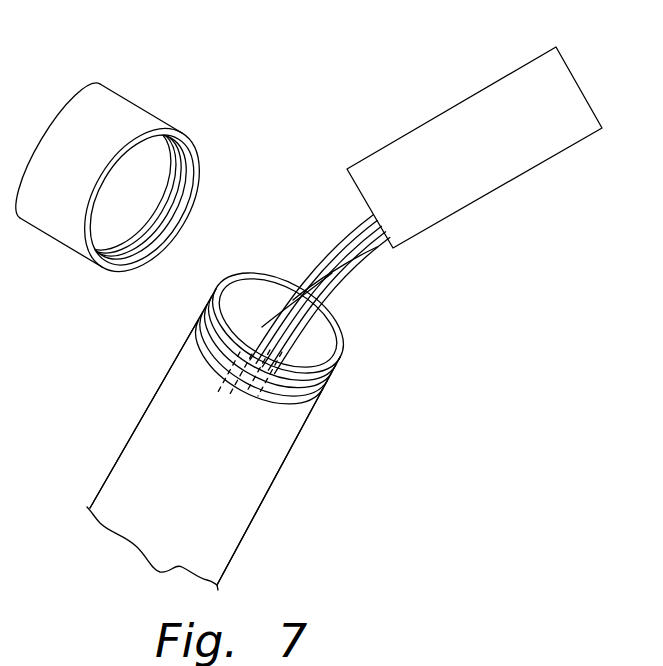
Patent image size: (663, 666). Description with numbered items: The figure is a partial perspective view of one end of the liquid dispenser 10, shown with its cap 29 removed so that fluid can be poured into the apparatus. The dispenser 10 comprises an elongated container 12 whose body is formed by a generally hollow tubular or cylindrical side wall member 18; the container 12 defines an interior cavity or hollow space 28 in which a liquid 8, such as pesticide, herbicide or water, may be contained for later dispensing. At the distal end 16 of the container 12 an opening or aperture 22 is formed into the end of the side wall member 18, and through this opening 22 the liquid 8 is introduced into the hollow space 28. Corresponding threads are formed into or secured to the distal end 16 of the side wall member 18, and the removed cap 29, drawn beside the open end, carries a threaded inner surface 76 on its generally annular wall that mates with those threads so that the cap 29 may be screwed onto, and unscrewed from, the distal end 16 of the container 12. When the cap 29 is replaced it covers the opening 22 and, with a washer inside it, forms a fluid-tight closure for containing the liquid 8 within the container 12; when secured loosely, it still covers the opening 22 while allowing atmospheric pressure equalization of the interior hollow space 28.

The end cap 29 is at (100, 125).
The threaded inner surface 76 is at (151, 258).
The liquid 8 is at (327, 262).
The interior cavity or hollow space 28 is at (312, 343).
The opening or aperture 22 is at (308, 358).
The distal end 16 is at (379, 383).
The dispenser 10 is at (352, 467).
The side wall member 18 is at (202, 497).
The elongated container 12 is at (197, 533).